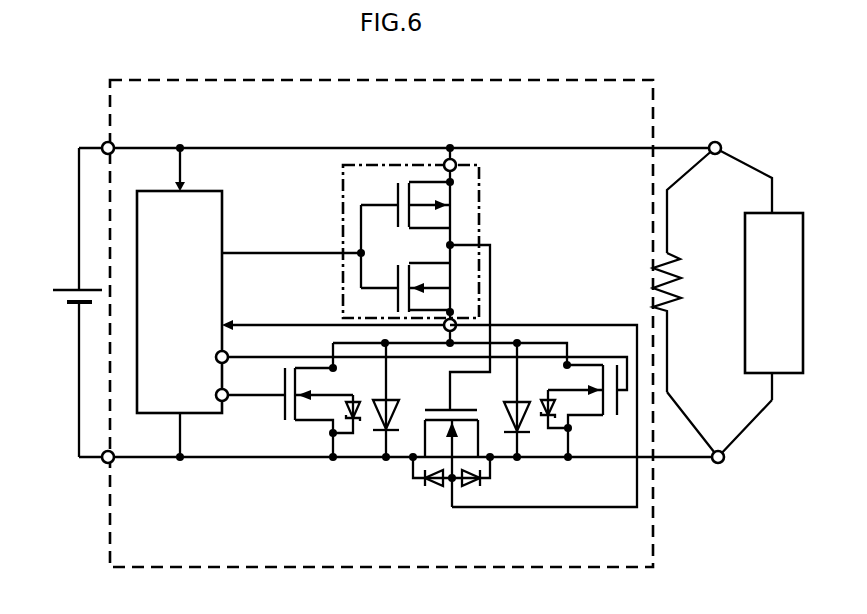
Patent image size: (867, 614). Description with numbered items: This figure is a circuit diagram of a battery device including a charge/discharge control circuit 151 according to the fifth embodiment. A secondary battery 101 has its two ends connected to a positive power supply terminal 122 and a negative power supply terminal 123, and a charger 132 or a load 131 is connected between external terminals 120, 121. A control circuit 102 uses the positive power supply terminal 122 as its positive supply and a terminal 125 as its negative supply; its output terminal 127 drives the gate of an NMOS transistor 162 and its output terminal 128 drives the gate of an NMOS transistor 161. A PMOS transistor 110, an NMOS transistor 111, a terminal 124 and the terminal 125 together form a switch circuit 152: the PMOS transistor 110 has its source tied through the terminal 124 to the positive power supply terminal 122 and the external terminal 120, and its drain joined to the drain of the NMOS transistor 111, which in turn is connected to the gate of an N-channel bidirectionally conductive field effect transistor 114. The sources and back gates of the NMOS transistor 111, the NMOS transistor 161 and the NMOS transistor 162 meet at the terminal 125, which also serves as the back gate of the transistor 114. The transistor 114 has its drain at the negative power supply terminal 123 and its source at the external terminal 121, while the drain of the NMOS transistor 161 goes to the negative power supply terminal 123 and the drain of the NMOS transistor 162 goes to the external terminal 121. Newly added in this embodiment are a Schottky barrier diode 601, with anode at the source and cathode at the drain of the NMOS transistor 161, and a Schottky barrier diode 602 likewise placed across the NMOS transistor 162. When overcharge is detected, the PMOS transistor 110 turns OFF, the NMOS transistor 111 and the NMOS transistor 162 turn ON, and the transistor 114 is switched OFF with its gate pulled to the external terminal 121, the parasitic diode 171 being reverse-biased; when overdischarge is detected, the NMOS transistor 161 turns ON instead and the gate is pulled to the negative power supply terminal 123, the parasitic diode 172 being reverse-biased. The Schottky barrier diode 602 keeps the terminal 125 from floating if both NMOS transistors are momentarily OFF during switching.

The secondary battery 101 is at (56, 303).
The control circuit 102 is at (195, 407).
The PMOS transistor 110 is at (392, 193).
The NMOS transistor 111 is at (392, 302).
The N-channel bidirectionally conductive field effect transistor 114 is at (472, 462).
The external terminal 120 is at (716, 160).
The external terminal 121 is at (717, 440).
The positive power supply terminal 122 is at (99, 141).
The negative power supply terminal 123 is at (99, 470).
The terminal 124 is at (446, 158).
The terminal 125 is at (446, 334).
The output terminal 127 is at (421, 360).
The output terminal 128 is at (250, 409).
The load 131 is at (685, 322).
The charger 132 is at (781, 290).
The charge/discharge control circuit 151 is at (655, 532).
The switch circuit 152 is at (478, 232).
The NMOS transistor 161 is at (300, 425).
The NMOS transistor 162 is at (584, 430).
The parasitic diode 171 is at (350, 425).
The parasitic diode 172 is at (543, 413).
The Schottky barrier diode 601 is at (410, 462).
The Schottky barrier diode 602 is at (523, 398).